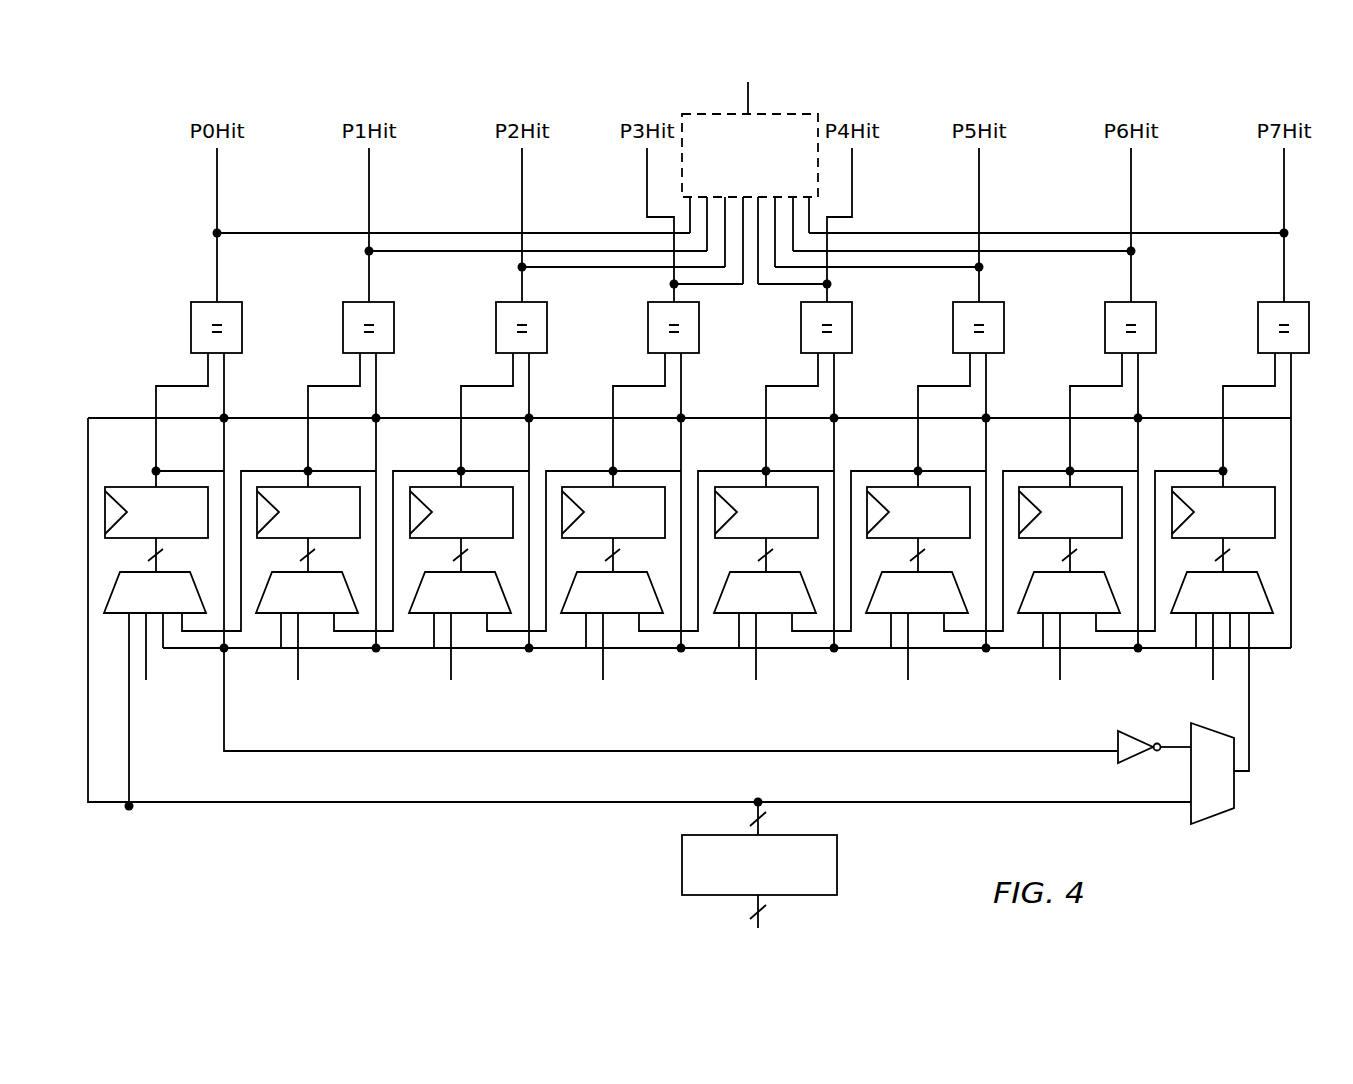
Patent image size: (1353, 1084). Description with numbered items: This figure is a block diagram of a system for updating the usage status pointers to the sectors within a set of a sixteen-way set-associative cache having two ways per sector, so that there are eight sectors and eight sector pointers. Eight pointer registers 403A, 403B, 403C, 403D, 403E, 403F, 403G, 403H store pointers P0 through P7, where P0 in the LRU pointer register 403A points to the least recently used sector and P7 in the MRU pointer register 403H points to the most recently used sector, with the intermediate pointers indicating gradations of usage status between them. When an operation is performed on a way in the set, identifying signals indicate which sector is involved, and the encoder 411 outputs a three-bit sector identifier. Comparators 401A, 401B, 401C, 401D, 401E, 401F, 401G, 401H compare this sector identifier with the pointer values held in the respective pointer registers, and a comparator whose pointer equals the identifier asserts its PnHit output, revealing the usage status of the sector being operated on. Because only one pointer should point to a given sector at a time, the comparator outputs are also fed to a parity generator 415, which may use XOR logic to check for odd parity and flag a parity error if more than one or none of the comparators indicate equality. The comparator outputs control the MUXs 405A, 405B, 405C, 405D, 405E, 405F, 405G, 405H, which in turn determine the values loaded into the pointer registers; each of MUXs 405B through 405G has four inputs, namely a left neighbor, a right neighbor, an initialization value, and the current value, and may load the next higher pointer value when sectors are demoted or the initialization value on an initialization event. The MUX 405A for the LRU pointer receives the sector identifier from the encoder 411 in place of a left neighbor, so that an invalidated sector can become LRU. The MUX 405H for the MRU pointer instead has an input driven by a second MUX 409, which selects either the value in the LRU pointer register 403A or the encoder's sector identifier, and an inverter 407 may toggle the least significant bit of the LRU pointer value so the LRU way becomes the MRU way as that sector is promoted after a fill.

The comparator 401A is at (197, 354).
The comparator 401B is at (333, 477).
The comparator 401C is at (486, 477).
The comparator 401D is at (638, 477).
The comparator 401E is at (791, 477).
The comparator 401F is at (943, 477).
The comparator 401G is at (1095, 477).
The comparator 401H is at (1248, 475).
The LRU pointer register 403A is at (171, 487).
The pointer register 403B is at (358, 531).
The pointer register 403C is at (511, 531).
The pointer register 403D is at (663, 531).
The pointer register 403E is at (816, 531).
The pointer register 403F is at (968, 531).
The pointer register 403G is at (1121, 531).
The MRU pointer register 403H is at (1244, 501).
The MUX 405A is at (130, 604).
The MUX 405B is at (307, 642).
The MUX 405C is at (460, 642).
The MUX 405D is at (612, 642).
The MUX 405E is at (765, 642).
The MUX 405F is at (917, 642).
The MUX 405G is at (1069, 642).
The MUX 405H is at (1222, 671).
The inverter 407 is at (1120, 757).
The second MUX 409 is at (1220, 811).
The encoder 411 is at (742, 890).
The parity generator 415 is at (732, 194).